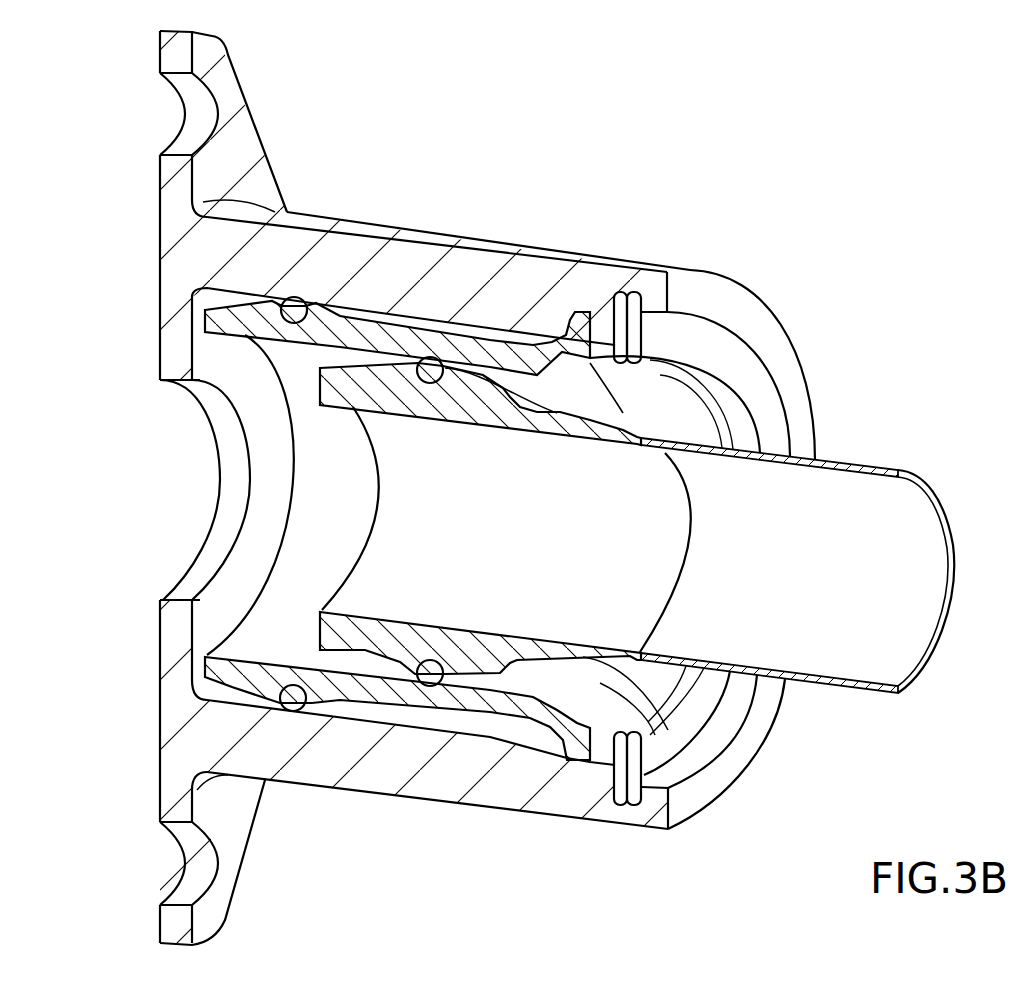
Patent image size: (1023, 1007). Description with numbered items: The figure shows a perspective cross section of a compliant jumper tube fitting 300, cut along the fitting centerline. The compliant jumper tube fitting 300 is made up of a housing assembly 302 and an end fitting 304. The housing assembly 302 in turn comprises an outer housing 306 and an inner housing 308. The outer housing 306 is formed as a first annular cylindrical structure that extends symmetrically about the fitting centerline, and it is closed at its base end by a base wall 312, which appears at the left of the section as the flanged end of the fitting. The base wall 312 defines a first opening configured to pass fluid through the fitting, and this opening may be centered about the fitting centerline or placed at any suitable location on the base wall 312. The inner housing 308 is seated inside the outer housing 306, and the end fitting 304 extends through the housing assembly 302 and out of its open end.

The compliant jumper tube fitting 300 is at (542, 488).
The housing assembly 302 is at (398, 150).
The end fitting 304 is at (543, 622).
The outer housing 306 is at (418, 279).
The inner housing 308 is at (430, 695).
The base wall 312 is at (182, 352).